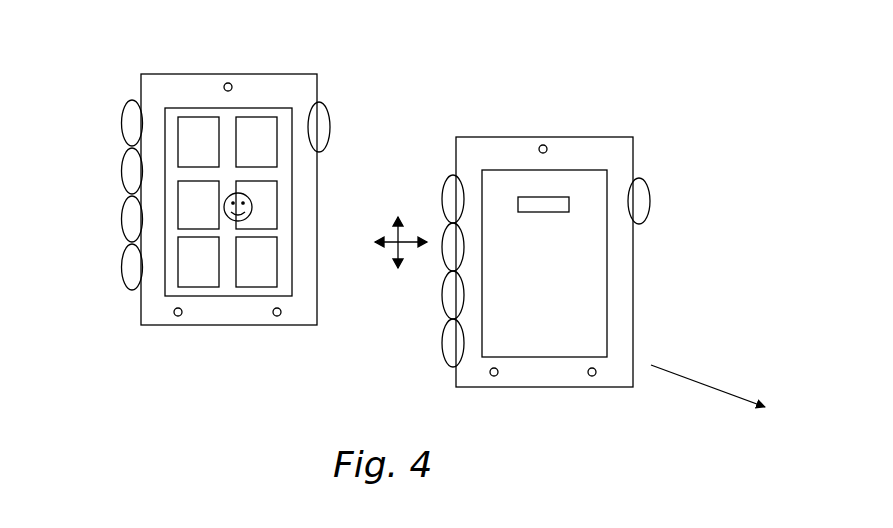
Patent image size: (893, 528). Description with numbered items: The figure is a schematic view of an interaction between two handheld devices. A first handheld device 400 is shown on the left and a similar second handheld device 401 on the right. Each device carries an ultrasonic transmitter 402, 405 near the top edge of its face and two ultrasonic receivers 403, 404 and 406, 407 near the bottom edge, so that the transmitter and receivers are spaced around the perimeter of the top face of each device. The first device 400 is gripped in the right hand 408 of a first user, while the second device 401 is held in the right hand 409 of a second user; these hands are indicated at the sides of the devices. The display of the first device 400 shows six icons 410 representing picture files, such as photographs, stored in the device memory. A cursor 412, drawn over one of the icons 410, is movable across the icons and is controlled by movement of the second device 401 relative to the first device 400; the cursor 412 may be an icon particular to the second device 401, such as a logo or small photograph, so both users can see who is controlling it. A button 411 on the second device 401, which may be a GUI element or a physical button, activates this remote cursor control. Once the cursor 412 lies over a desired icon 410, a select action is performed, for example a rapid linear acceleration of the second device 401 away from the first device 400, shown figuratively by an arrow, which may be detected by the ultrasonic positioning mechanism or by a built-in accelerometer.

The first handheld device 400 is at (272, 88).
The second handheld device 401 is at (583, 152).
The ultrasonic transmitter 402 is at (228, 83).
The ultrasonic receiver 403 is at (178, 316).
The ultrasonic receiver 404 is at (277, 316).
The ultrasonic transmitter 405 is at (543, 145).
The ultrasonic receiver 406 is at (497, 375).
The ultrasonic receiver 407 is at (595, 375).
The right hand 408 is at (114, 97).
The right hand 409 is at (445, 170).
The icons 410 is at (265, 273).
The button 411 is at (558, 206).
The cursor 412 is at (249, 207).